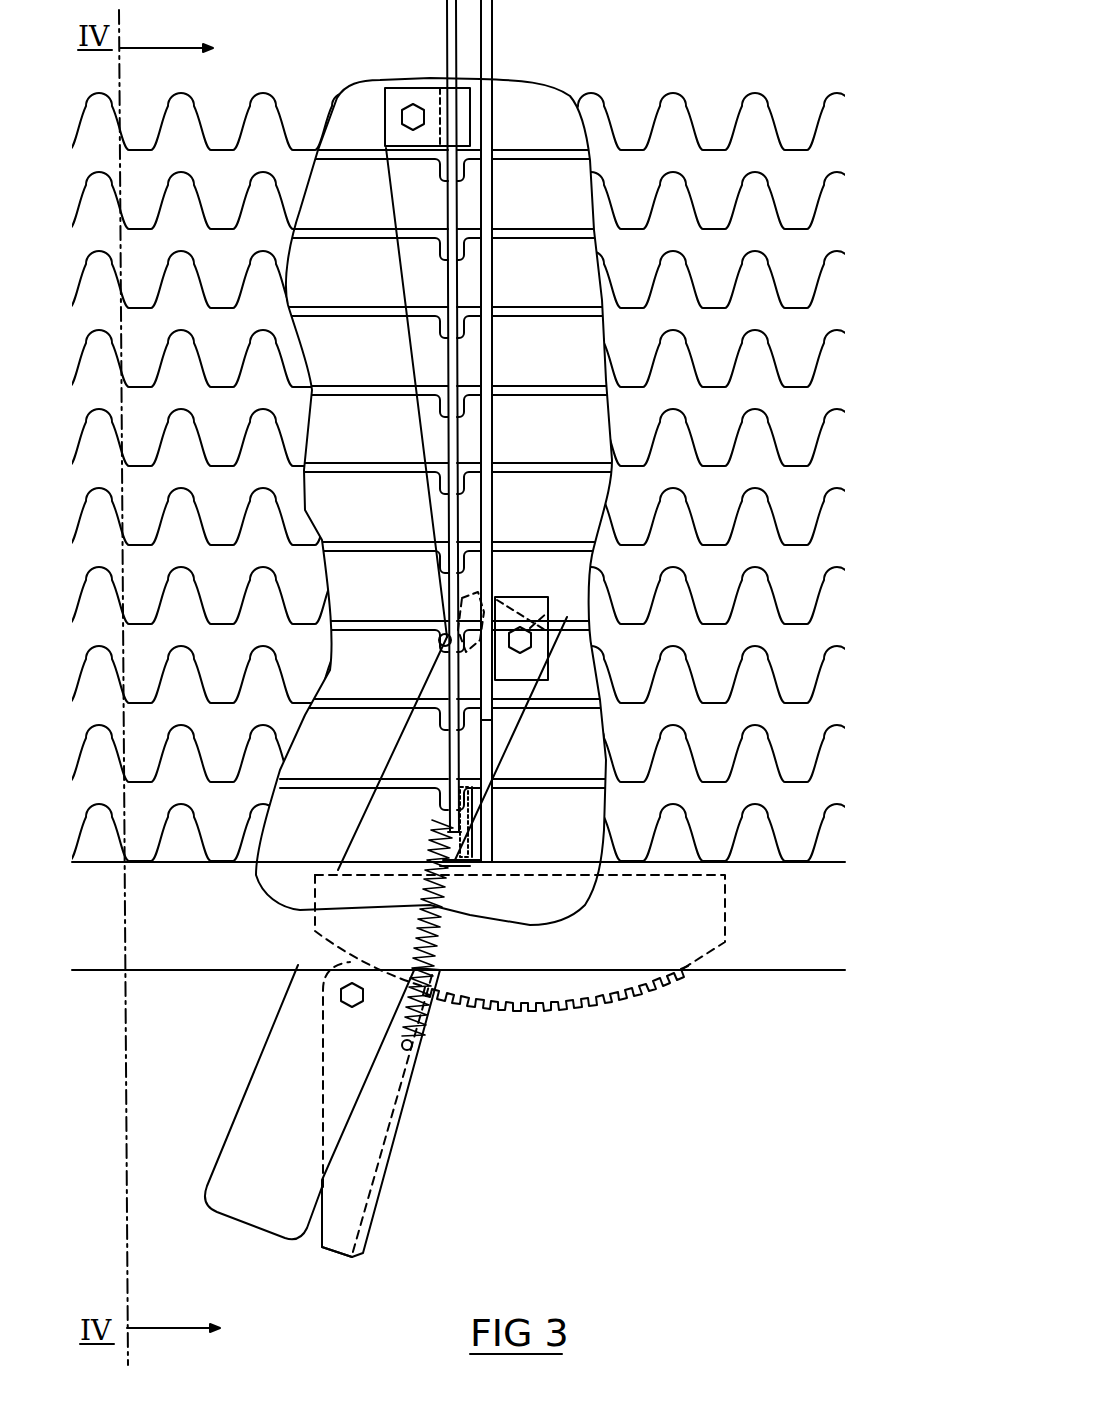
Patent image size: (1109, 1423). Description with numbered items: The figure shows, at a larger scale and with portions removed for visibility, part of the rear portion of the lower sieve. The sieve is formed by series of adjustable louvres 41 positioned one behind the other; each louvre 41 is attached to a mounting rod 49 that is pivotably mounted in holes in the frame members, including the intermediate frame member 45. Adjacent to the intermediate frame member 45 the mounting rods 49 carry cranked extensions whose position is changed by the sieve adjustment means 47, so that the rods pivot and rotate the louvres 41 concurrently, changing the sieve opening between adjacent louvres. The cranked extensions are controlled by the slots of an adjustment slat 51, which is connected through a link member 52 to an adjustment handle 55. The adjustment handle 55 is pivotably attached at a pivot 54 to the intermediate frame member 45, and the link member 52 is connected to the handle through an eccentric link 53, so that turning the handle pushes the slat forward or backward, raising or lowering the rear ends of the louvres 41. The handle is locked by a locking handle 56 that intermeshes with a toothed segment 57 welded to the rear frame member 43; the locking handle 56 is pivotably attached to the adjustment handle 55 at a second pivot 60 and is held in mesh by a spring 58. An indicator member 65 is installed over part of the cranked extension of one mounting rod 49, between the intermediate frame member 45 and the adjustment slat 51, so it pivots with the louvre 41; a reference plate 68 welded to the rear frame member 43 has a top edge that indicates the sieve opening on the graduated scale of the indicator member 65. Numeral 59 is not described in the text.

The louvre 41 is at (795, 672).
The rear frame member 43 is at (753, 962).
The intermediate frame member 45 is at (492, 15).
The sieve adjustment means 47 is at (388, 1194).
The mounting rod 49 is at (387, 627).
The adjustment slat 51 is at (447, 10).
The link member 52 is at (425, 205).
The eccentric link 53 is at (440, 638).
The pivot 54 is at (560, 625).
The adjustment handle 55 is at (232, 1200).
The locking handle 56 is at (353, 1213).
The toothed segment 57 is at (538, 978).
The spring 58 is at (440, 1003).
The rod end 59 is at (445, 763).
The second pivot 60 is at (340, 995).
The indicator member 65 is at (477, 727).
The reference plate 68 is at (470, 865).